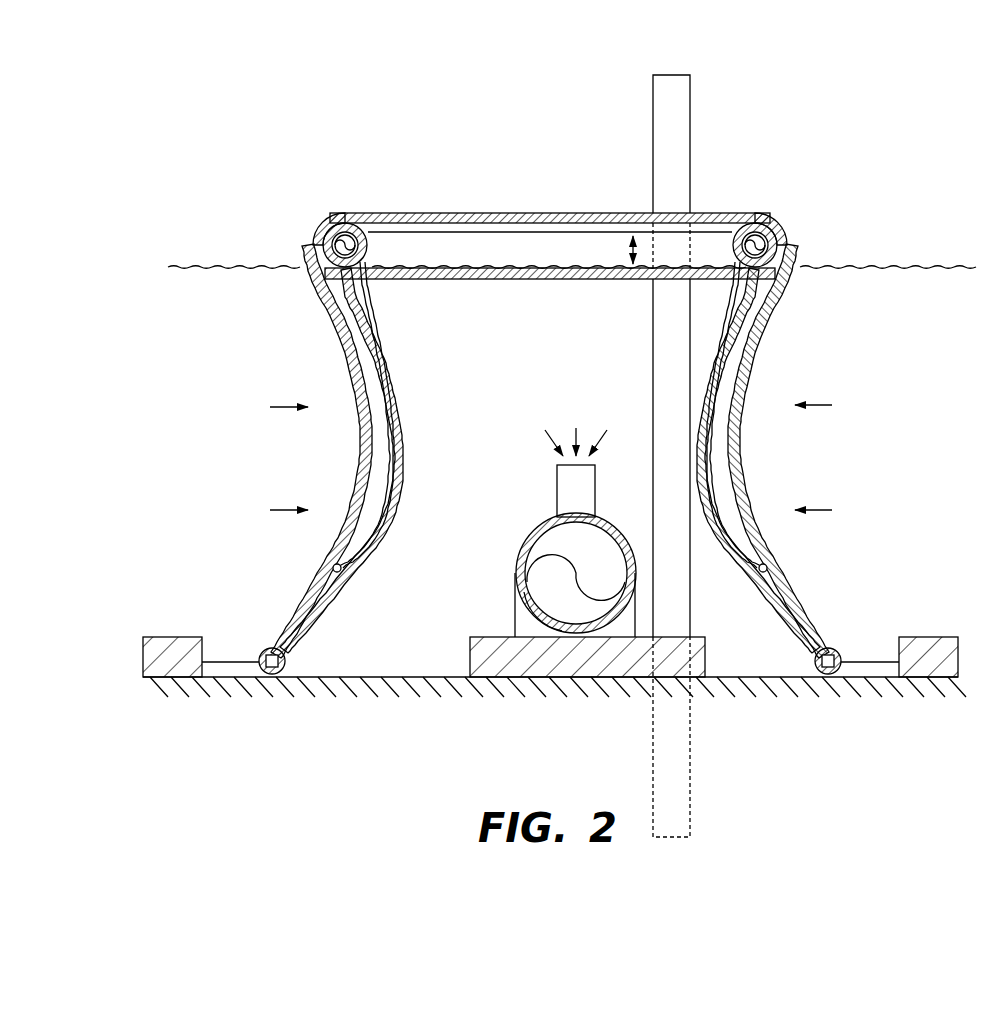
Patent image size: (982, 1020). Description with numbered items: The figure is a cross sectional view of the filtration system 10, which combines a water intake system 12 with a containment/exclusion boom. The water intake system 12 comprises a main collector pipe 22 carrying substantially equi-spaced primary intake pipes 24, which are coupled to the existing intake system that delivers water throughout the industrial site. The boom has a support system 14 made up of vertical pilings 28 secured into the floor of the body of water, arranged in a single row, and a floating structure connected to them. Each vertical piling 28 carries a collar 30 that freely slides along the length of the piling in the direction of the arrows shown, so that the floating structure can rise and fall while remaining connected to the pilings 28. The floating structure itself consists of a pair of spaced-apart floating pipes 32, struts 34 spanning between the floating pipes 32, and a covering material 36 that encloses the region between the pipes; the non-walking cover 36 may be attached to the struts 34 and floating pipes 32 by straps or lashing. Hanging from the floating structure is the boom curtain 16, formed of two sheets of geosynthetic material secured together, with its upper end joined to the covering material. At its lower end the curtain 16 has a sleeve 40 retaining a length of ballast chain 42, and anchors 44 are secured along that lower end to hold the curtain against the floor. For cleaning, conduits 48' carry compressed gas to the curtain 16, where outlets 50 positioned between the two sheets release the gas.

The filtration system 10 is at (322, 103).
The water intake system 12 is at (478, 578).
The support system 14 is at (720, 168).
The boom curtain 16 is at (292, 328).
The main collector pipe 22 is at (530, 547).
The primary intake pipes 24 is at (558, 487).
The vertical pilings 28 is at (678, 80).
The collar 30 is at (626, 222).
The floating pipes 32 is at (352, 213).
The struts 34 is at (481, 232).
The covering material 36 is at (546, 223).
The sleeve 40 is at (287, 661).
The ballast chain 42 is at (272, 672).
The anchors 44 is at (190, 637).
The conduits 48' is at (554, 460).
The outlets 50 is at (332, 567).